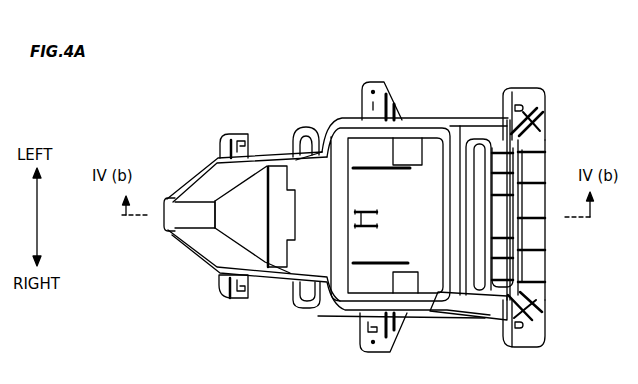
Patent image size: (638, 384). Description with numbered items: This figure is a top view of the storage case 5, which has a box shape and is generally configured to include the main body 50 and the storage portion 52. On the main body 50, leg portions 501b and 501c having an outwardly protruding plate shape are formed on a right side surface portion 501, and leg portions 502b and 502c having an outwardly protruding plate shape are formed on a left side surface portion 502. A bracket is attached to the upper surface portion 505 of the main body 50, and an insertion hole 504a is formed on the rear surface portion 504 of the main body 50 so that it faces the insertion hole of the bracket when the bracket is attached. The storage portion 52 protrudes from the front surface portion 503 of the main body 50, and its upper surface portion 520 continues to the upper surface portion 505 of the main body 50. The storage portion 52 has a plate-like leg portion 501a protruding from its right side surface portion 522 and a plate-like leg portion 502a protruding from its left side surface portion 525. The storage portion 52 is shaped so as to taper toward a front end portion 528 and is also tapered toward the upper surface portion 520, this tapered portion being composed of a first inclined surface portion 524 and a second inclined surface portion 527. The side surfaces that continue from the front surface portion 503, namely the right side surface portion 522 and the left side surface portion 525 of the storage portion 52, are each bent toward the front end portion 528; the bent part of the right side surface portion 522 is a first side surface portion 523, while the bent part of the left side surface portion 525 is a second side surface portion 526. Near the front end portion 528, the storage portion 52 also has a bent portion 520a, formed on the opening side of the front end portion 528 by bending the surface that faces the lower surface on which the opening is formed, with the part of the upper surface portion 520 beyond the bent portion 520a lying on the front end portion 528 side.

The storage case 5 is at (552, 60).
The main body 50 is at (340, 117).
The storage portion 52 is at (270, 148).
The right side surface portion 501 is at (355, 308).
The leg portion 501a is at (240, 298).
The leg portion 501b is at (380, 348).
The leg portion 501c is at (525, 337).
The left side surface portion 502 is at (426, 127).
The leg portion 502a is at (227, 143).
The leg portion 502b is at (373, 90).
The leg portion 502c is at (532, 97).
The front surface portion 503 is at (305, 148).
The rear surface portion 504 is at (461, 152).
The insertion hole 504a is at (480, 145).
The upper surface portion 505 is at (435, 300).
The upper surface portion 520 is at (265, 272).
The bent portion 520a is at (213, 216).
The right side surface portion 522 is at (258, 242).
The first side surface portion 523 is at (217, 223).
The first inclined surface portion 524 is at (218, 253).
The left side surface portion 525 is at (258, 155).
The second side surface portion 526 is at (190, 177).
The second inclined surface portion 527 is at (210, 182).
The front end portion 528 is at (172, 208).